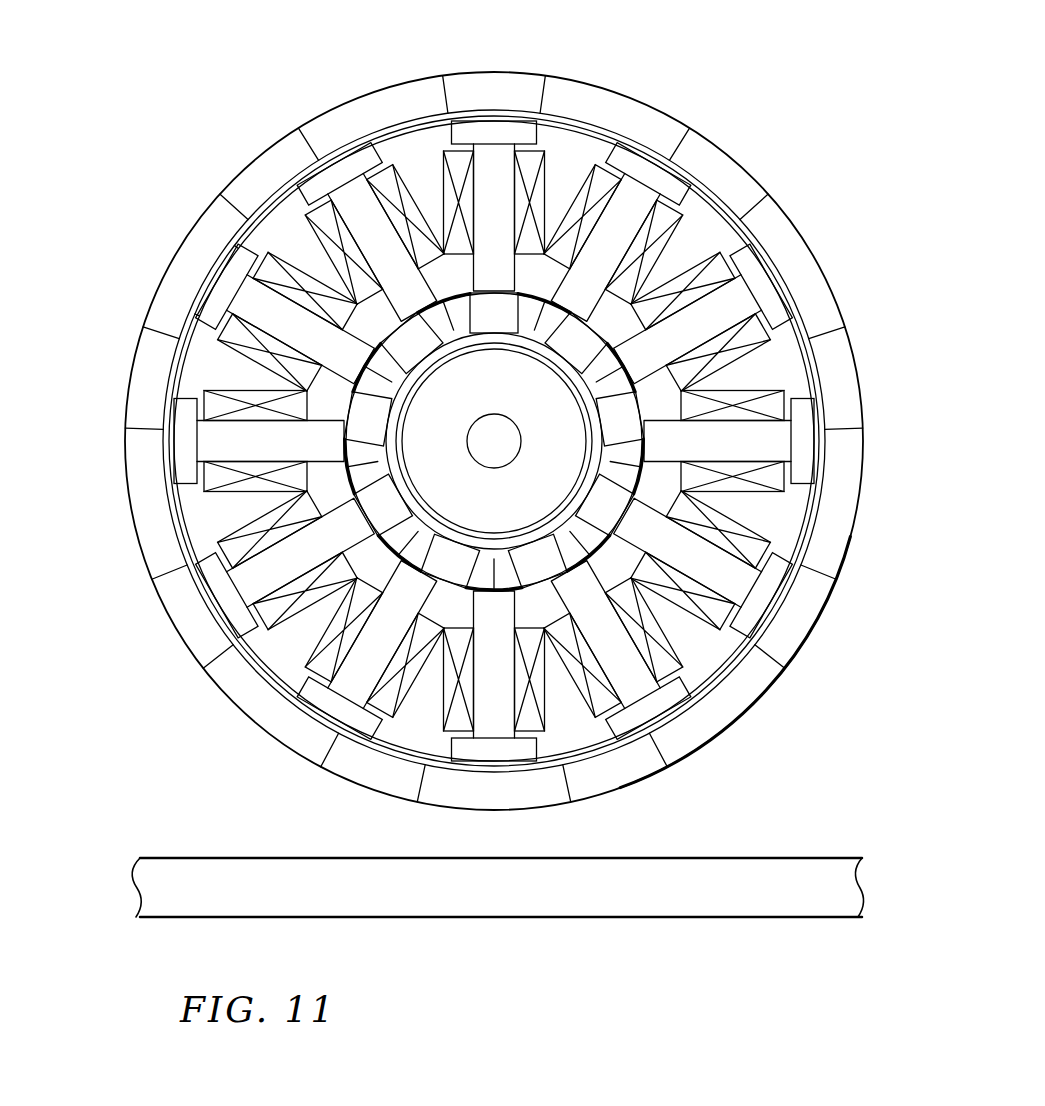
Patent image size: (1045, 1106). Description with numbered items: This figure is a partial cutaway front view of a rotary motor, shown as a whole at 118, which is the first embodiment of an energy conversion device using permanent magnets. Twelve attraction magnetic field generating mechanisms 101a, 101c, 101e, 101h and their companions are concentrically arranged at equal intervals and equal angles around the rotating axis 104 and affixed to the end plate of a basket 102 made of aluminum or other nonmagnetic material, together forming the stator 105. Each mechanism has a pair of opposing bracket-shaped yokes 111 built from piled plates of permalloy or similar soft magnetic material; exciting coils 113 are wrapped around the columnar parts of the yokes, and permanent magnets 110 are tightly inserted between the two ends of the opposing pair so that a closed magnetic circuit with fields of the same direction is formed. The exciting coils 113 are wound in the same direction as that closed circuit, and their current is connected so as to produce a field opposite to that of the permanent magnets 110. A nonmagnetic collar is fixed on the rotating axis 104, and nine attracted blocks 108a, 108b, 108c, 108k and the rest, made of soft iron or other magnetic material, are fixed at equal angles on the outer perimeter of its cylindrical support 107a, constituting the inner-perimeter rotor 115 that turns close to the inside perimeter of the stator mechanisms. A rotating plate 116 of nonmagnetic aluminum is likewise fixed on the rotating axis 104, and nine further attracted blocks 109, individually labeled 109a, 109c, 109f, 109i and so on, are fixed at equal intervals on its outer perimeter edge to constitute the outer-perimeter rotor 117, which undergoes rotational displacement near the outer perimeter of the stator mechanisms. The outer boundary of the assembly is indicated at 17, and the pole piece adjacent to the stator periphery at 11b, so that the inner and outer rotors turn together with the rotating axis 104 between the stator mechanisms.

The motor 118 is at (163, 135).
The outer housing 17 is at (838, 592).
The attracted blocks 109 is at (539, 87).
The attracted block 109a is at (470, 92).
The attracted block 109c is at (852, 412).
The attracted block 109f is at (381, 773).
The attracted block 109i is at (242, 192).
The attraction magnetic field generating mechanism 101a is at (546, 133).
The attraction magnetic field generating mechanism 101c is at (800, 303).
The attraction magnetic field generating mechanism 101e is at (382, 152).
The attraction magnetic field generating mechanism 101h is at (321, 718).
The permanent magnets 110 is at (672, 166).
The rotating plate 116 is at (126, 396).
The outer-perimeter rotor 117 is at (700, 172).
The exciting coils 113 is at (313, 192).
The pole shoe 11b is at (778, 338).
The yokes 111 is at (406, 192).
The inner-perimeter rotor 115 is at (356, 423).
The attracted block 108a is at (497, 329).
The attracted block 108b is at (571, 353).
The attracted block 108c is at (541, 548).
The attracted block 108k is at (374, 508).
The stator 105 is at (583, 557).
The cylindrical support 107a is at (590, 421).
The rotating axis 104 is at (495, 437).
The basket 102 is at (481, 896).